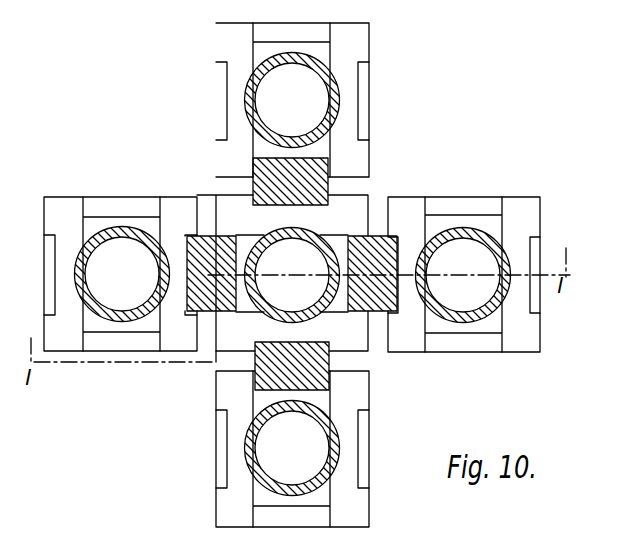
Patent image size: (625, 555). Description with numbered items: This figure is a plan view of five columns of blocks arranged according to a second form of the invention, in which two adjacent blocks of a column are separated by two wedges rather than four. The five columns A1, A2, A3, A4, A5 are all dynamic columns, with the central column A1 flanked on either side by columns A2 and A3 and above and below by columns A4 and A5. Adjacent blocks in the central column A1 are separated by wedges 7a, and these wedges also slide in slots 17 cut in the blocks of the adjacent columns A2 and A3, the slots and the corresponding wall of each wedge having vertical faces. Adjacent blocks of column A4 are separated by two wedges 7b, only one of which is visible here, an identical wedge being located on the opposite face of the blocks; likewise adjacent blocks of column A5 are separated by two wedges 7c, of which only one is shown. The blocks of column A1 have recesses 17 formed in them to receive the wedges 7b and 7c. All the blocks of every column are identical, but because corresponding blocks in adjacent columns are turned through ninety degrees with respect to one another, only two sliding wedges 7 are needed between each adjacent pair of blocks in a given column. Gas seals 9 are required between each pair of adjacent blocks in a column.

The gas seal 9 is at (248, 97).
The sliding wedge 7 is at (377, 237).
The wedge 7a is at (213, 312).
The wedge 7b is at (255, 185).
The wedge 7c is at (325, 363).
The slot 17 is at (390, 237).
The column A1 is at (367, 354).
The column A2 is at (518, 352).
The column A3 is at (75, 352).
The column A4 is at (358, 165).
The column A5 is at (369, 504).